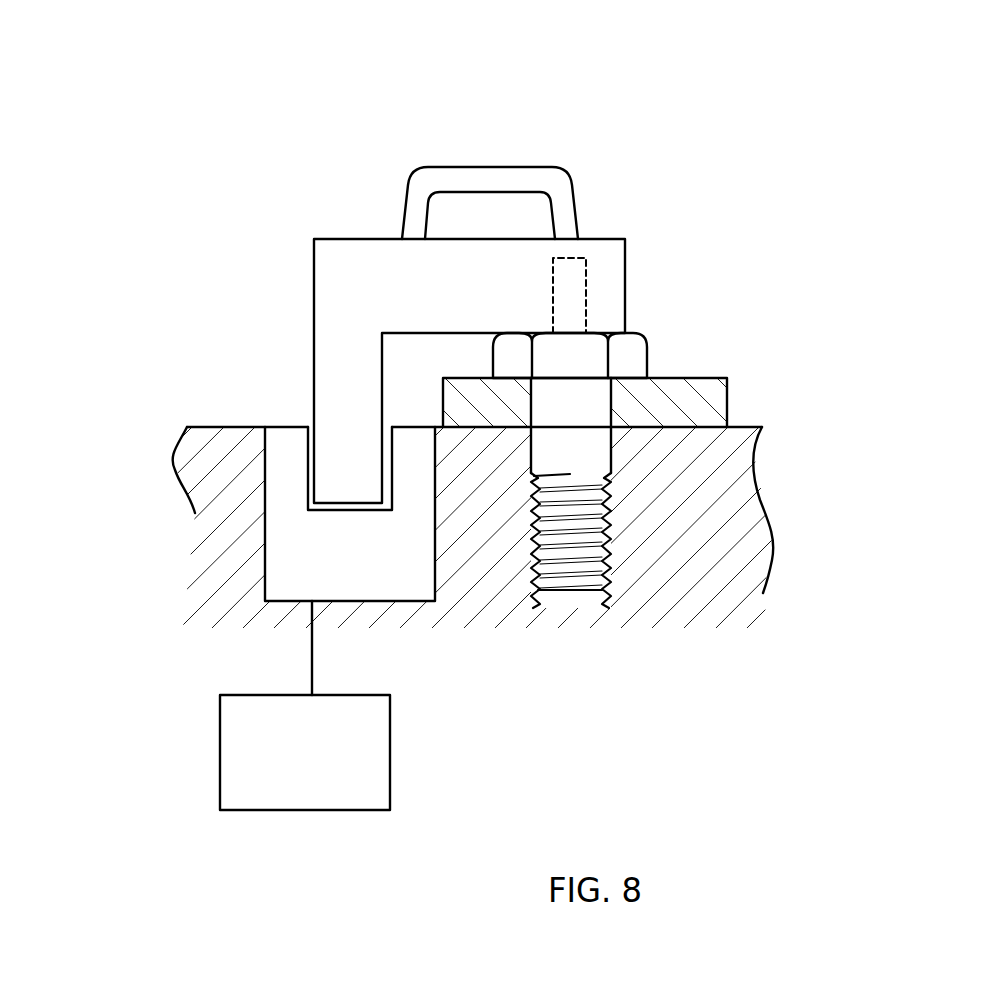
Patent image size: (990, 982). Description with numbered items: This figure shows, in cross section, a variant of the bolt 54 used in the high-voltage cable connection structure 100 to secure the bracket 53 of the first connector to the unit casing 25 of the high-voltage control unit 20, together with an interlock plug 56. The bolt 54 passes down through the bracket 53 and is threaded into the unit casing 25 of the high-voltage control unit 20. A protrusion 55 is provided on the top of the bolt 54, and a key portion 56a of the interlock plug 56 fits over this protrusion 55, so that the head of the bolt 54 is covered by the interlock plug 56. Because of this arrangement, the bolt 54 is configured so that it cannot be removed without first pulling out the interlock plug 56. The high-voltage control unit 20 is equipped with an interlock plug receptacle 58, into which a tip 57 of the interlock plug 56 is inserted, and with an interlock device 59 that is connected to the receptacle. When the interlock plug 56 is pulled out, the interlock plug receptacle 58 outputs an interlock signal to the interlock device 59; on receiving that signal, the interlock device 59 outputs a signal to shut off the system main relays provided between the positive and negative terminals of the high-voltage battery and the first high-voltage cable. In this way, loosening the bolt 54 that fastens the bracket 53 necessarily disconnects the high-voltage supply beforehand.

The high-voltage cable connection structure 100 is at (793, 166).
The high-voltage control unit 20 is at (756, 462).
The unit casing 25 is at (757, 425).
The bracket 53 is at (728, 402).
The bolt 54 is at (647, 348).
The protrusion 55 is at (588, 295).
The interlock plug 56 is at (313, 304).
The key portion 56a is at (588, 280).
The tip 57 is at (343, 455).
The interlock plug receptacle 58 is at (262, 573).
The interlock device 59 is at (390, 761).